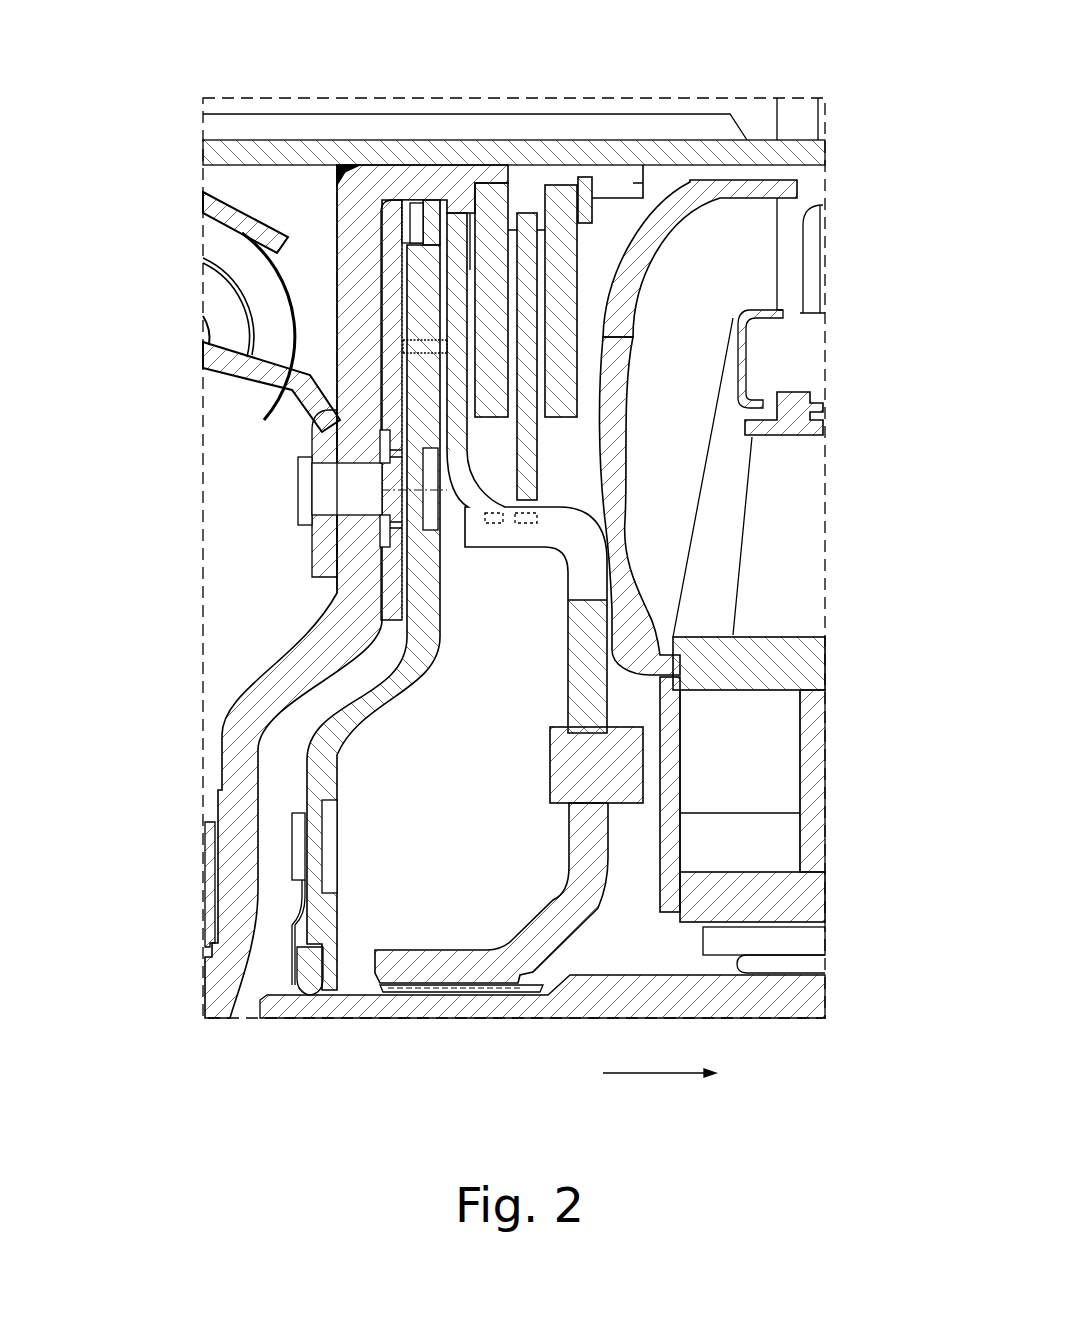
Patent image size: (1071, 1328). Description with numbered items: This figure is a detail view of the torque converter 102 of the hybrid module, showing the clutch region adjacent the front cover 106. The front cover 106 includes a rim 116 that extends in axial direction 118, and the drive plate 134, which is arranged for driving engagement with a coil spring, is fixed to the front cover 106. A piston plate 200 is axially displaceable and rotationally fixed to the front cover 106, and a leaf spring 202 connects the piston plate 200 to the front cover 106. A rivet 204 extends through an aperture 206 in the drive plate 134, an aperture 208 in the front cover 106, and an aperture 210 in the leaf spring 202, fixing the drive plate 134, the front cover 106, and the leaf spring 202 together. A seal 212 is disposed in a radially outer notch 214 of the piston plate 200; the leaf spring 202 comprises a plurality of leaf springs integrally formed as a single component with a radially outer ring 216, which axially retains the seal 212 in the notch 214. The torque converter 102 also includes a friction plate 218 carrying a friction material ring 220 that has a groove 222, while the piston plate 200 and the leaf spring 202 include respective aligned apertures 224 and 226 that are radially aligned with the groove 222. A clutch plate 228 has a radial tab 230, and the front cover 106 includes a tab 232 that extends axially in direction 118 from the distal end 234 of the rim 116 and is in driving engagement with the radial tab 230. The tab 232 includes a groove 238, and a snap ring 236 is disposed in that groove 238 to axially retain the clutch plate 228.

The torque converter 102 is at (845, 465).
The front cover 106 is at (243, 737).
The rim 116 is at (416, 203).
The axial direction 118 is at (660, 1073).
The drive plate 134 is at (325, 425).
The piston plate 200 is at (423, 642).
The leaf spring 202 is at (377, 560).
The rivet 204 is at (298, 462).
The aperture 206 is at (323, 488).
The aperture 208 is at (353, 498).
The aperture 210 is at (383, 507).
The seal 212 is at (435, 198).
The radially outer notch 214 is at (425, 215).
The radially outer ring 216 is at (386, 200).
The friction plate 218 is at (455, 288).
The friction material ring 220 is at (445, 292).
The groove 222 is at (765, 395).
The aperture 224 is at (337, 332).
The aperture 226 is at (403, 338).
The clutch plate 228 is at (550, 247).
The radial tab 230 is at (553, 190).
The tab 232 is at (643, 185).
The distal end 234 is at (480, 163).
The snap ring 236 is at (563, 243).
The groove 238 is at (593, 186).